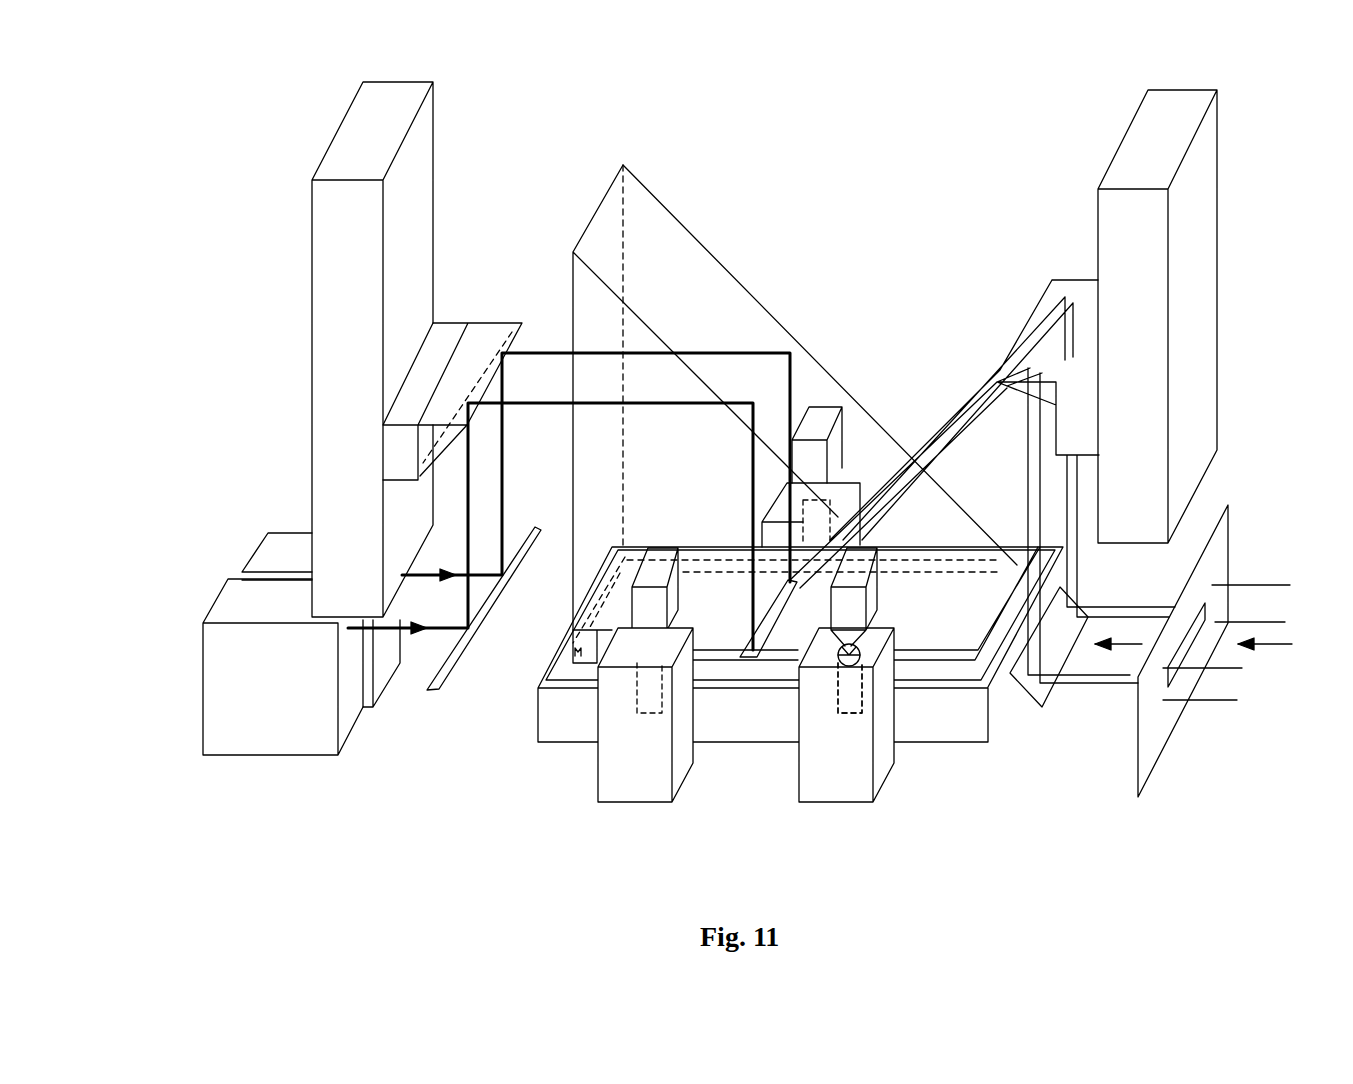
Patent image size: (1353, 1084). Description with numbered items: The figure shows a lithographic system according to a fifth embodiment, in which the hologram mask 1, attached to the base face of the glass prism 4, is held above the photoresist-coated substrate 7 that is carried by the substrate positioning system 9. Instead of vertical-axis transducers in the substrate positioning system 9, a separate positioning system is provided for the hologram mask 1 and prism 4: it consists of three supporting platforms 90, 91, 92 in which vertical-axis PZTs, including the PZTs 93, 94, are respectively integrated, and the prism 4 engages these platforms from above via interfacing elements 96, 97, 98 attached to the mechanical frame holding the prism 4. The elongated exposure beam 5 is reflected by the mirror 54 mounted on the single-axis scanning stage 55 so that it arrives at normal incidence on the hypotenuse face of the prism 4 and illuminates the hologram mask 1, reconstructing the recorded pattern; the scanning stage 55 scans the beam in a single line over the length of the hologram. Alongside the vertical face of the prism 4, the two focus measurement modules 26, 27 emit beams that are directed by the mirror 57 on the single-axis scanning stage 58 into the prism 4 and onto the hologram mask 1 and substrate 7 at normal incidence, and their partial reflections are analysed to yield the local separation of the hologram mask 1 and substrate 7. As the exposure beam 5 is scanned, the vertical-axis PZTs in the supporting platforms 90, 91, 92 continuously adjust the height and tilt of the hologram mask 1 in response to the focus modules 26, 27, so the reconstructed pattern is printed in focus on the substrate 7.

The hologram mask 1 is at (583, 650).
The prism 4 is at (700, 260).
The exposure beam 5 is at (1118, 645).
The substrate 7 is at (563, 667).
The substrate positioning system 9 is at (988, 738).
The focus measurement module 26 is at (222, 612).
The focus measurement module 27 is at (255, 553).
The mirror 54 is at (1052, 280).
The single-axis scanning stage 55 is at (1217, 337).
The mirror 57 is at (505, 323).
The single-axis scanning stage 58 is at (320, 293).
The supporting platform 90 is at (660, 795).
The supporting platform 91 is at (858, 795).
The supporting platform 92 is at (838, 505).
The vertical-axis PZT 93 is at (855, 707).
The vertical-axis PZT 94 is at (840, 527).
The interfacing element 96 is at (643, 630).
The interfacing element 97 is at (848, 627).
The interfacing element 98 is at (820, 407).